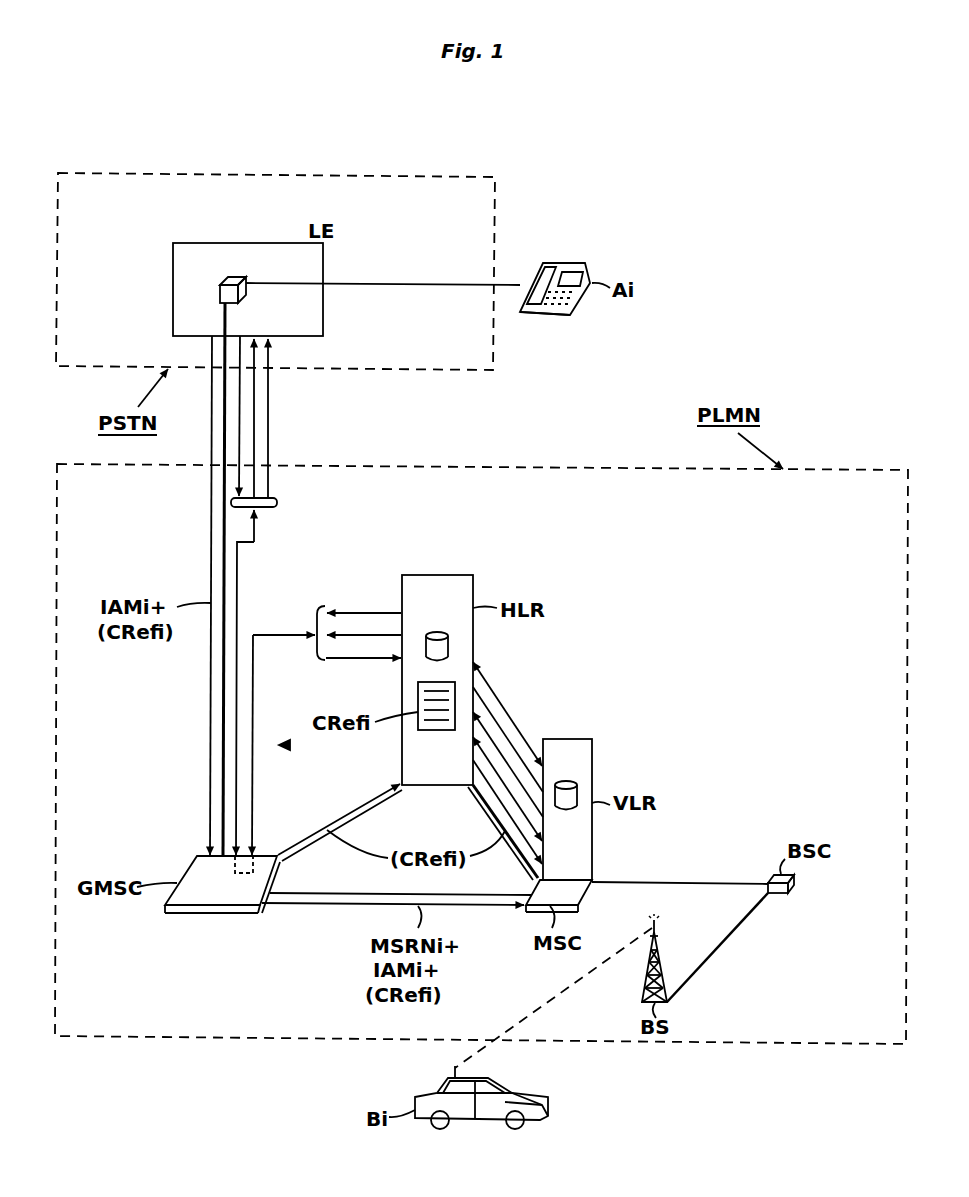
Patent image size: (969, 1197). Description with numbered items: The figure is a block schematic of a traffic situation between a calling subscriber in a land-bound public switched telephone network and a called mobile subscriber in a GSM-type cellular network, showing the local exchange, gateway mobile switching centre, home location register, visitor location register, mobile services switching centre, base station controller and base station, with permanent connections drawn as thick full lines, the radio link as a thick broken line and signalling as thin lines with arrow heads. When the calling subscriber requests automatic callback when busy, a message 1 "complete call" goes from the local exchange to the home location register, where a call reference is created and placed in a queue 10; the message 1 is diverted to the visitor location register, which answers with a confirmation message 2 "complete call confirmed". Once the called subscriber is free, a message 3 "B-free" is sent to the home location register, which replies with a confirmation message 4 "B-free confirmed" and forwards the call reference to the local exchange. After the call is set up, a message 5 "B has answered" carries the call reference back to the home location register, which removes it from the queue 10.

The message "complete call" 1 is at (240, 383).
The confirmation message "complete call confirmed" 2 is at (254, 408).
The message "B-free" 3 is at (268, 438).
The confirmation message "B-free confirmed" 4 is at (508, 735).
The message "B has answered" 5 is at (505, 705).
The queue 10 is at (418, 692).